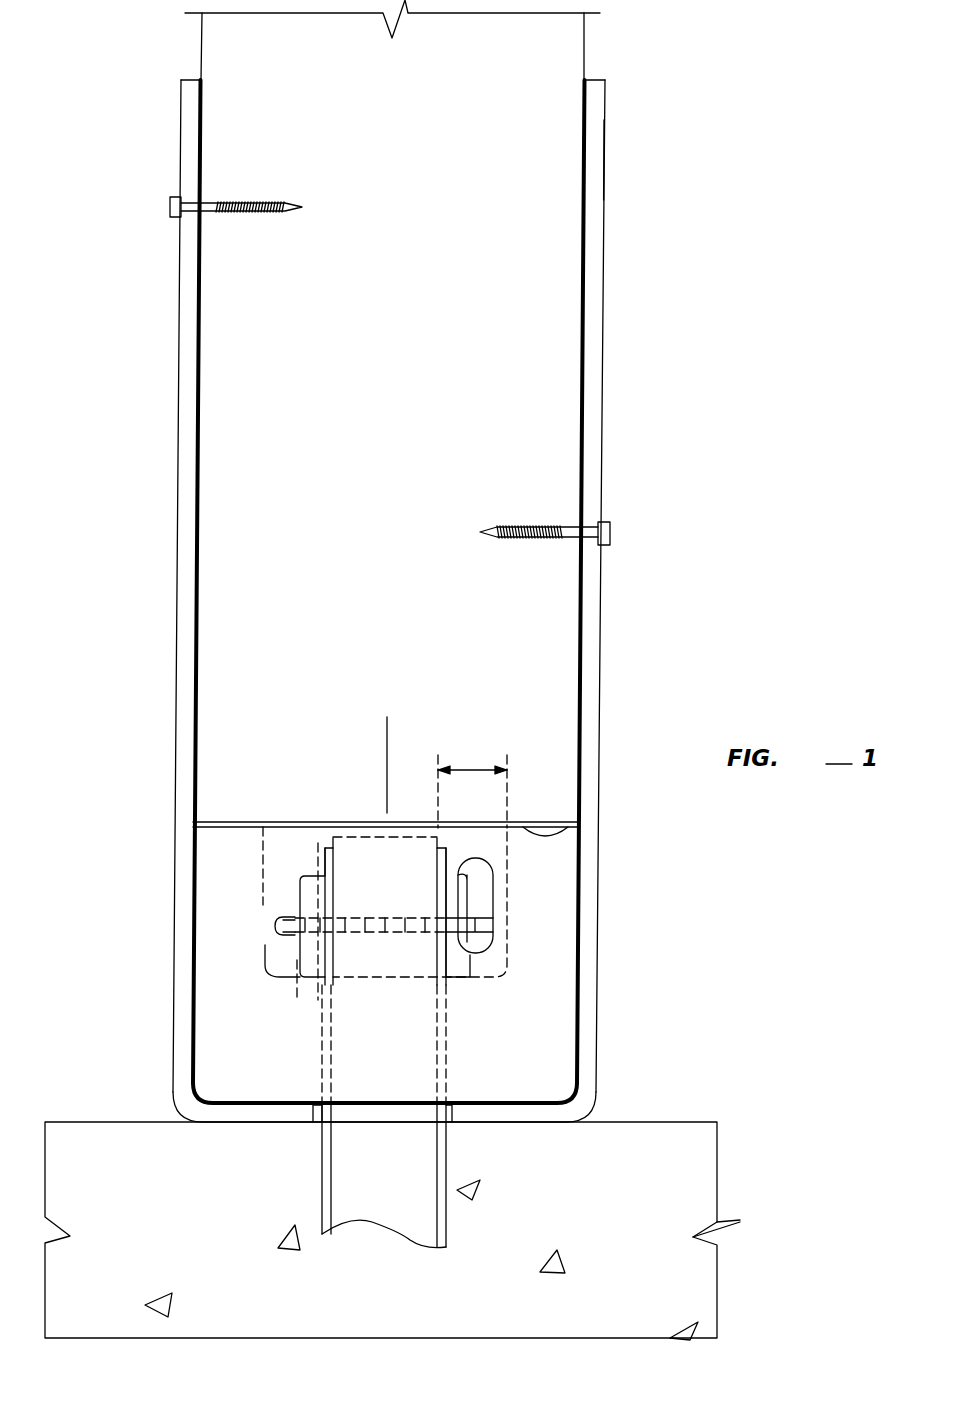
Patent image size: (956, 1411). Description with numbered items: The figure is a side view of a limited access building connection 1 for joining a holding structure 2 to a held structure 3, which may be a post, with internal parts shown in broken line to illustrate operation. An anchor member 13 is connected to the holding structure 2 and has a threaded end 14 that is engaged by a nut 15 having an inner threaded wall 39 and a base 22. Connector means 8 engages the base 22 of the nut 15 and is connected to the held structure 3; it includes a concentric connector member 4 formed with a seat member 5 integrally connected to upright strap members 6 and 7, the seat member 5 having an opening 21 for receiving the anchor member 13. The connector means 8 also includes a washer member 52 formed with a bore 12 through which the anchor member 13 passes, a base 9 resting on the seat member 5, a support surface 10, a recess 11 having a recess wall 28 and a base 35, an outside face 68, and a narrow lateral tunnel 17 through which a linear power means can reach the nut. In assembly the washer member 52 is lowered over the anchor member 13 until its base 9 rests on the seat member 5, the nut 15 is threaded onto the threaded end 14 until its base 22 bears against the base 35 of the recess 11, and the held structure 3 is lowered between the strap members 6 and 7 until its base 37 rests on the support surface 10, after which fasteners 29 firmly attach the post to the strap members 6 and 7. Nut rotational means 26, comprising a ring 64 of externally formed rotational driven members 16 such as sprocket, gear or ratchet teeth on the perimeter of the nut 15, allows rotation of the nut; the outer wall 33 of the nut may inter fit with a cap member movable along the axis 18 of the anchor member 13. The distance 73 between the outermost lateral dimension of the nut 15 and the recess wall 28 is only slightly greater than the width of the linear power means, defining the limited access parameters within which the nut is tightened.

The limited access building connection 1 is at (785, 439).
The holding structure 2 is at (642, 1205).
The held structure 3 is at (466, 172).
The concentric connector member 4 is at (603, 185).
The seat member 5 is at (533, 1112).
The upright strap member 6 is at (177, 574).
The upright strap member 7 is at (600, 638).
The connector means 8 is at (748, 985).
The base 9 is at (485, 1108).
The support surface 10 is at (224, 821).
The recess 11 is at (507, 860).
The bore 12 is at (448, 1038).
The anchor member 13 is at (445, 1215).
The threaded end 14 is at (467, 837).
The nut 15 is at (293, 882).
The rotational driven member 16 is at (270, 925).
The narrow lateral tunnel 17 is at (494, 893).
The axis 18 is at (387, 732).
The opening 21 is at (330, 1112).
The base 22 is at (305, 980).
The nut rotational means 26 is at (264, 938).
The recess wall 28 is at (498, 934).
The fastener 29 is at (170, 207).
The outer wall 33 is at (297, 903).
The base 35 is at (500, 975).
The base 37 is at (450, 842).
The inner threaded wall 39 is at (340, 862).
The washer member 52 is at (177, 1067).
The ring 64 is at (290, 938).
The outside face 68 is at (541, 1076).
The distance 73 is at (470, 768).